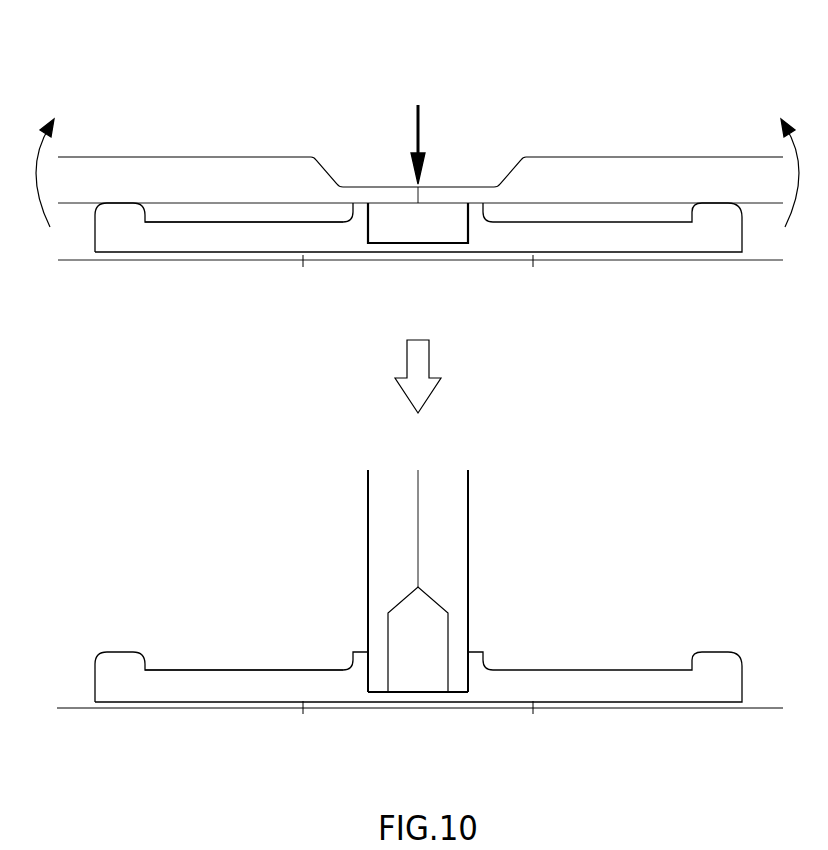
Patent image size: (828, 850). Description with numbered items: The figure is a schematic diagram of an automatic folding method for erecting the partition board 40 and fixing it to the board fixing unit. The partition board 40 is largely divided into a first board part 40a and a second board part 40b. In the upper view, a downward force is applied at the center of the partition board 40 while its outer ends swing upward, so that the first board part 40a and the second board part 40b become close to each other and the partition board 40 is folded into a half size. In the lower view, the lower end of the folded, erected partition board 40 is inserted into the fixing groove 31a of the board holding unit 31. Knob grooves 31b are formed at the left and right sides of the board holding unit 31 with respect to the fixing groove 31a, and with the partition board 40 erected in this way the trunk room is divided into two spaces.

The partition board 40 is at (263, 58).
The first board part 40a is at (280, 170).
The second board part 40b is at (553, 173).
The board holding unit 31 is at (719, 243).
The fixing groove 31a is at (465, 223).
The knob grooves 31b is at (183, 213).